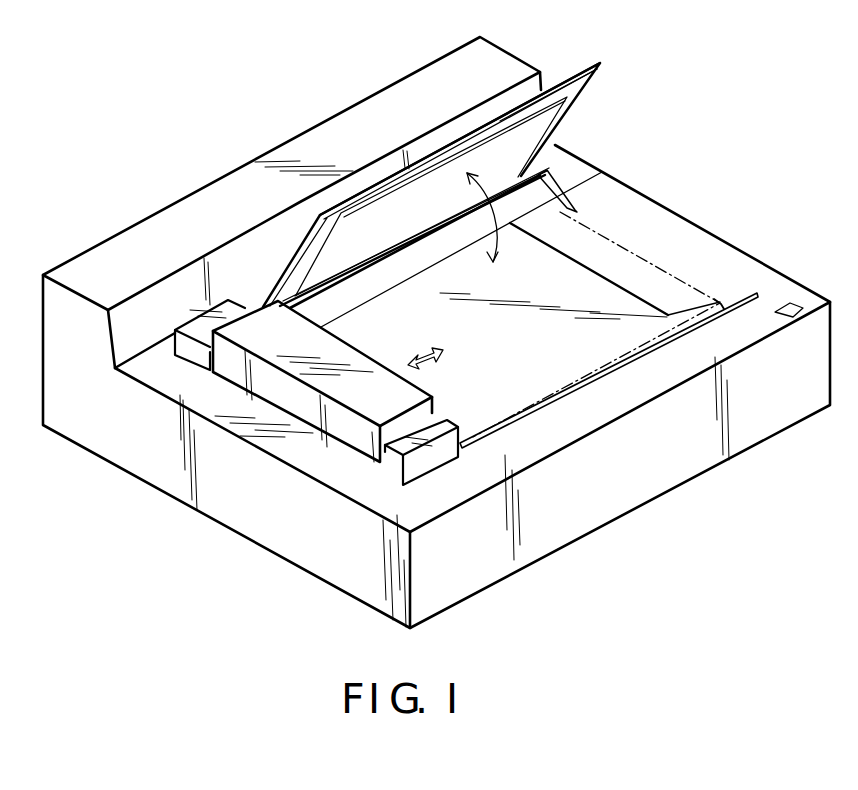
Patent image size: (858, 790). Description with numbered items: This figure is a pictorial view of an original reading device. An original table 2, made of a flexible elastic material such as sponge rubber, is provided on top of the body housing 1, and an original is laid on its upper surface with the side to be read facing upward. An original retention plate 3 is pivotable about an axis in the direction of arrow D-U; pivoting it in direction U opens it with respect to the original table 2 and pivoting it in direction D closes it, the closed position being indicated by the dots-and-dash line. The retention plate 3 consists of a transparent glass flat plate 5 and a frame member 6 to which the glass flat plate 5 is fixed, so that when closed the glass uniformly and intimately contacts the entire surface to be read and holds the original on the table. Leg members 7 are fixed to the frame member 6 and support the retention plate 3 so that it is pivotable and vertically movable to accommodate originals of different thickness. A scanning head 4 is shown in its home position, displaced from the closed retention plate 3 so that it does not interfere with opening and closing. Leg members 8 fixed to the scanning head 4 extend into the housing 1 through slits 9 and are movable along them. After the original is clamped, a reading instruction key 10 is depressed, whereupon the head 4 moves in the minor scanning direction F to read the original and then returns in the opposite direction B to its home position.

The body housing 1 is at (217, 507).
The original table 2 is at (645, 292).
The original retention plate 3 is at (493, 250).
The scanning head 4 is at (320, 423).
The transparent glass flat plate 5 is at (560, 115).
The frame member 6 is at (582, 87).
The leg members 7 is at (560, 190).
The leg members 8 is at (200, 330).
The slits 9 is at (262, 304).
The reading instruction key 10 is at (793, 307).